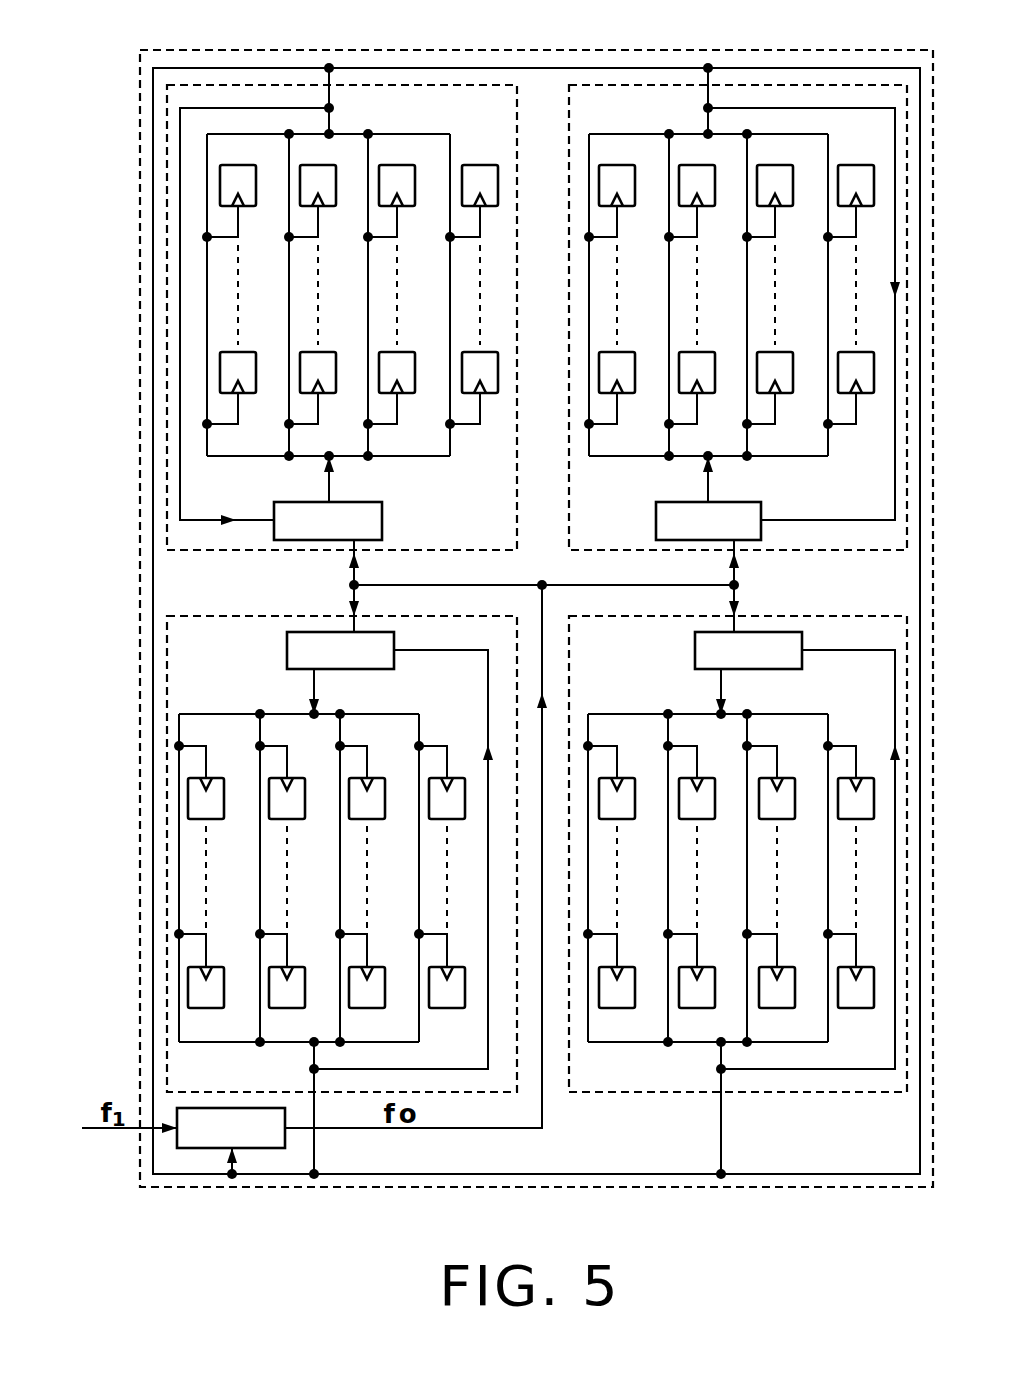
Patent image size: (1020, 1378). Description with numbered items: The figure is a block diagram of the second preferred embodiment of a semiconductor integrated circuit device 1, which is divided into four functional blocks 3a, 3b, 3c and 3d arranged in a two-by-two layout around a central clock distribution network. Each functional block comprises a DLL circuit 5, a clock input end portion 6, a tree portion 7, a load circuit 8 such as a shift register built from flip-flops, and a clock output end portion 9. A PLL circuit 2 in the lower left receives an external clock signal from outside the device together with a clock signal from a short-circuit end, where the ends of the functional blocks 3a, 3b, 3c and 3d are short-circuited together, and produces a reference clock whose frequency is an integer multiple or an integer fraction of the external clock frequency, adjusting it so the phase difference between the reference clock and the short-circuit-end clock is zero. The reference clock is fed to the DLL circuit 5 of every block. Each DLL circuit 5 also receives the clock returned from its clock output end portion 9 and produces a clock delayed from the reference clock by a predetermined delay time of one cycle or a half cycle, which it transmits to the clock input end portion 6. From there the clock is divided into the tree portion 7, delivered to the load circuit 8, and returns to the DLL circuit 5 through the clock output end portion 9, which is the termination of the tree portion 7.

The semiconductor integrated circuit device 1 is at (850, 52).
The PLL circuit 2 is at (286, 1143).
The functional block 3a is at (219, 553).
The functional block 3b is at (852, 553).
The functional block 3c is at (483, 1095).
The functional block 3d is at (860, 1097).
The DLL circuit 5 is at (383, 521).
The clock input end portion 6 is at (237, 457).
The tree portion 7 is at (289, 287).
The load circuit 8 is at (247, 396).
The clock output end portion 9 is at (421, 134).